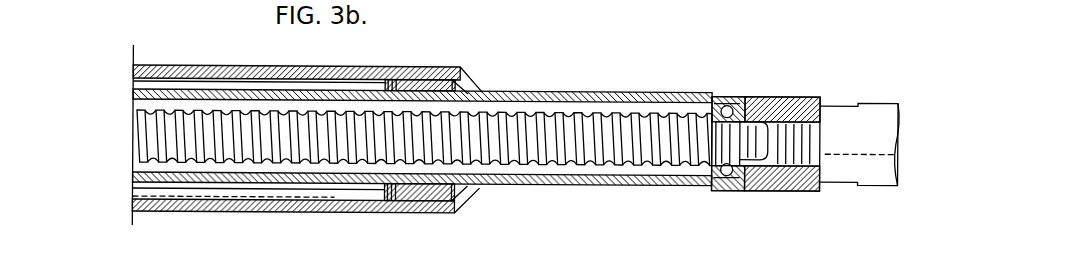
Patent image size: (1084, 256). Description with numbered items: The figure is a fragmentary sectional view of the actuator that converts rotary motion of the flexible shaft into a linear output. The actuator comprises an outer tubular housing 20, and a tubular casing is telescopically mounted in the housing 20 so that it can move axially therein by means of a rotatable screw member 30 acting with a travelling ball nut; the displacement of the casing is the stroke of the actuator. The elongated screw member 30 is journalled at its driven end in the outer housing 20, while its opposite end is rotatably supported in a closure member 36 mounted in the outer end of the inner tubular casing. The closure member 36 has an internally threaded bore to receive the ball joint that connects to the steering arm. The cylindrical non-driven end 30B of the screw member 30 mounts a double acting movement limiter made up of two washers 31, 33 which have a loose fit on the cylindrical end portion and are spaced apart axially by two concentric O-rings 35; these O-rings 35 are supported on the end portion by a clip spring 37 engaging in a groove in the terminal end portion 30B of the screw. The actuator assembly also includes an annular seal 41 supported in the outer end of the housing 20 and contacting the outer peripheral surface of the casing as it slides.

The outer tubular housing 20 is at (172, 63).
The rotatable screw member 30 is at (532, 163).
The cylindrical non-driven end 30B is at (772, 187).
The washer 31 is at (700, 180).
The washer 33 is at (745, 182).
The concentric O-rings 35 is at (716, 100).
The closure member 36 is at (808, 97).
The clip spring 37 is at (757, 97).
The annular seal 41 is at (446, 72).